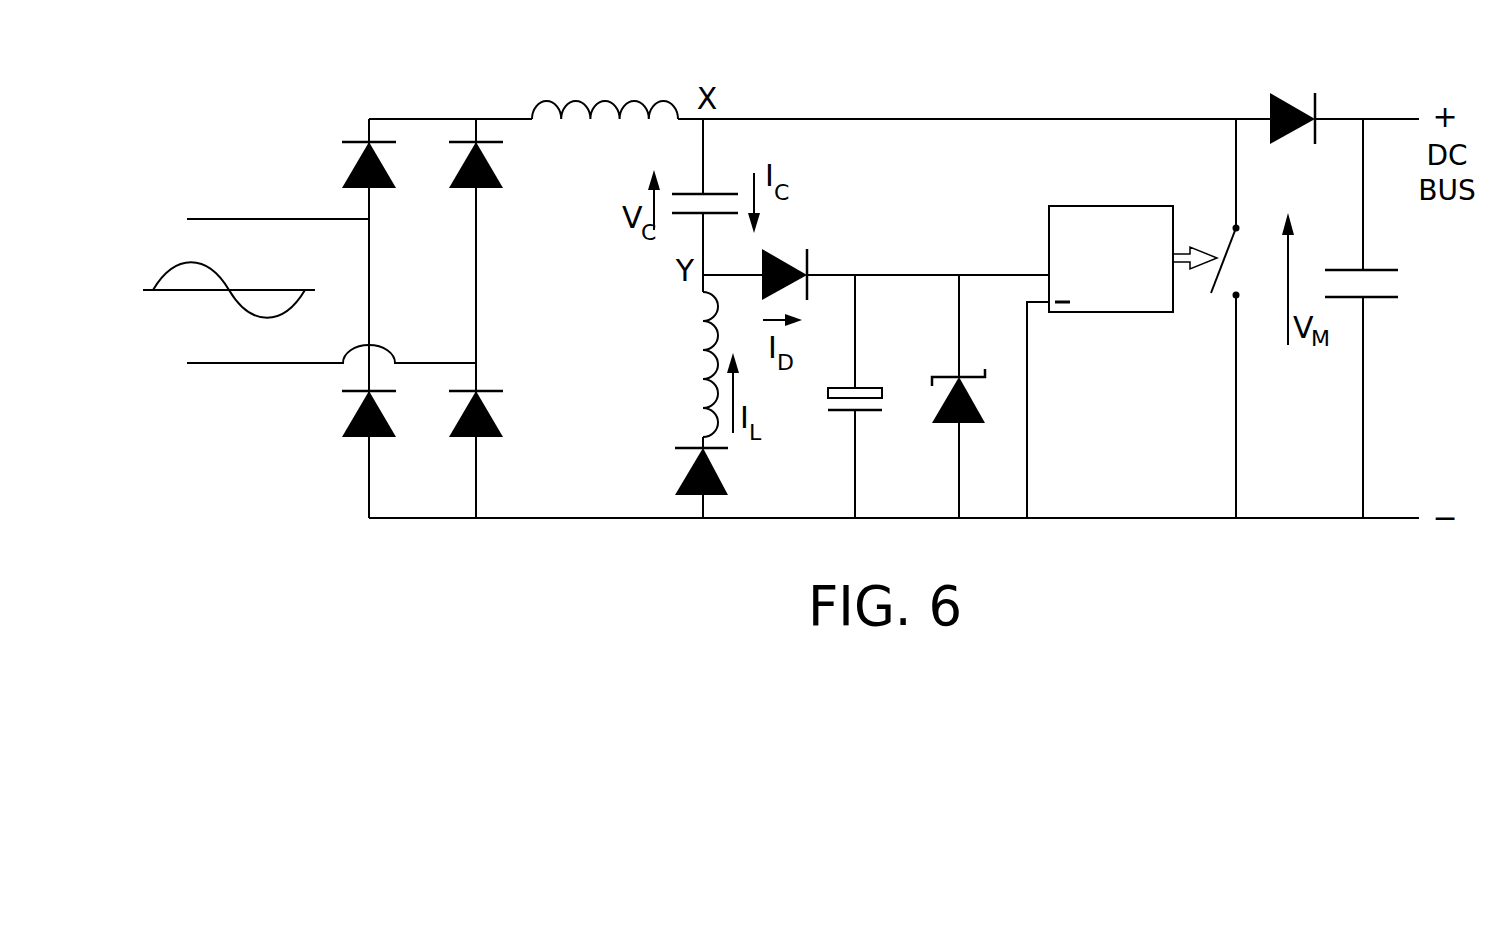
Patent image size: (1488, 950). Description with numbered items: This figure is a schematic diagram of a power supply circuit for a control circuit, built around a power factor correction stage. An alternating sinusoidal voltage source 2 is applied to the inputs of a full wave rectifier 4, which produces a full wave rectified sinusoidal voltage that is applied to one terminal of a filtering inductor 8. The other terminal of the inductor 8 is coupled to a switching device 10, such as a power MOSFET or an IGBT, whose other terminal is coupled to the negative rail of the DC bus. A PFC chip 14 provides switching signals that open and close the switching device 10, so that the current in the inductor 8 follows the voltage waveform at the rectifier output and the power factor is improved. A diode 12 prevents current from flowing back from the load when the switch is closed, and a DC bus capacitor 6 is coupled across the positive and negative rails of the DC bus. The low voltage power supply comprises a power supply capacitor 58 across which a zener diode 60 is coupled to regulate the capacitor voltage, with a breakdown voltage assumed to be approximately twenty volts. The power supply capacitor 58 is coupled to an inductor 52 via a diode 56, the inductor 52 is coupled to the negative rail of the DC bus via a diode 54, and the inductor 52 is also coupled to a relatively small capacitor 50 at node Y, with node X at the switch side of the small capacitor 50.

The AC input source 2 is at (149, 246).
The full wave rectifier 4 is at (427, 556).
The DC bus capacitor 6 is at (1340, 290).
The filtering inductor 8 is at (542, 103).
The switching device 10 is at (1227, 267).
The diode 12 is at (1290, 95).
The PFC chip 14 is at (1060, 206).
The capacitor 50 is at (705, 192).
The inductor 52 is at (692, 362).
The diode 54 is at (680, 470).
The diode 56 is at (815, 248).
The power supply capacitor 58 is at (868, 388).
The zener diode 60 is at (947, 425).